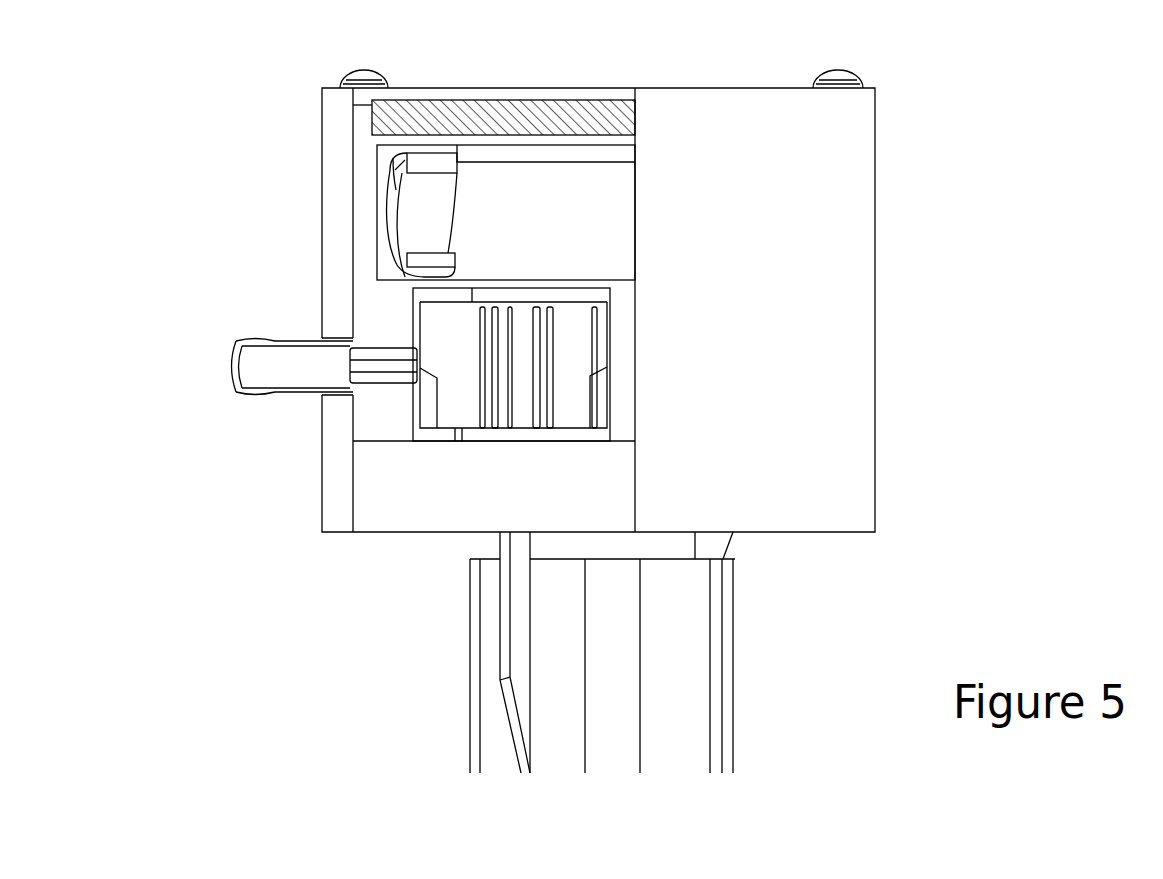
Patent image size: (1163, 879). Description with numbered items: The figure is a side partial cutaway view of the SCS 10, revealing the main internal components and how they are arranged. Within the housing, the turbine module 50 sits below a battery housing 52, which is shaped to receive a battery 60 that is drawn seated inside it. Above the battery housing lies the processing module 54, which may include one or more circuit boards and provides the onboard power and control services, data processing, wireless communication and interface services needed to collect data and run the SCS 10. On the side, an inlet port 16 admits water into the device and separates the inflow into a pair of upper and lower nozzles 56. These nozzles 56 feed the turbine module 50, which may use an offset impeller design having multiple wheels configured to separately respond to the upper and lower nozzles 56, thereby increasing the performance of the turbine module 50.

The SCS 10 is at (948, 240).
The inlet port 16 is at (271, 400).
The turbine module 50 is at (463, 408).
The battery housing 52 is at (366, 223).
The processing module 54 is at (380, 119).
The nozzles 56 is at (385, 337).
The battery 60 is at (427, 218).